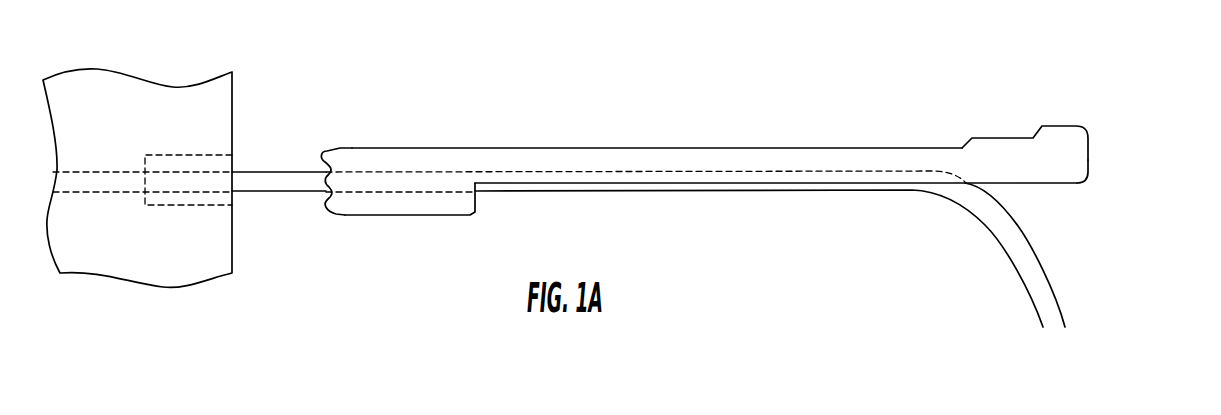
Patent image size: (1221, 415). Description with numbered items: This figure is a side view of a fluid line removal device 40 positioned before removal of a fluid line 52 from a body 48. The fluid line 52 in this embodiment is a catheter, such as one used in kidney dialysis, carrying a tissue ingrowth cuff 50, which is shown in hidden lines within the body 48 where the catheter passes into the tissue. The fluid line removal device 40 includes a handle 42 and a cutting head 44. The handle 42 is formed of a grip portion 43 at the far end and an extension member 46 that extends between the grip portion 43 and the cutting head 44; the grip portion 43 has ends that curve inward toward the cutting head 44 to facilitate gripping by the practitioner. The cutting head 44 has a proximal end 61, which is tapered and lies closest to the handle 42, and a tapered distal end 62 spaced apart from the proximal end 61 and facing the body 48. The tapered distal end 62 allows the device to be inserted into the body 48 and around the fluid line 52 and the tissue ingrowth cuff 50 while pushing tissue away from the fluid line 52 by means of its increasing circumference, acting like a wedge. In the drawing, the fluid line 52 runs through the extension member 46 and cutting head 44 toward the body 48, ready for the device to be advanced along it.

The fluid line removal device 40 is at (606, 177).
The handle 42 is at (1090, 168).
The grip portion 43 is at (1092, 148).
The cutting head 44 is at (448, 148).
The extension member 46 is at (648, 147).
The body 48 is at (212, 80).
The tissue ingrowth cuff 50 is at (207, 155).
The fluid line 52 is at (252, 191).
The proximal end 61 is at (477, 202).
The tapered distal end 62 is at (342, 148).